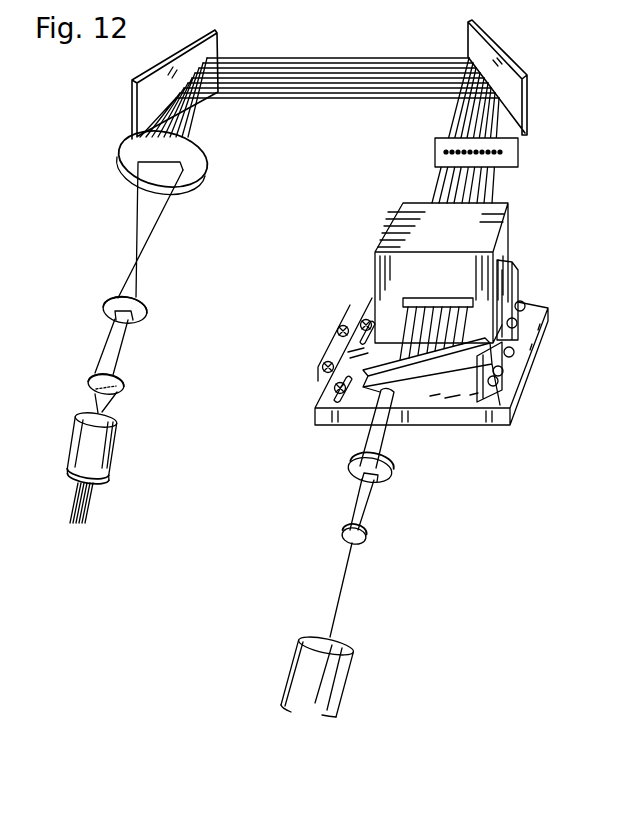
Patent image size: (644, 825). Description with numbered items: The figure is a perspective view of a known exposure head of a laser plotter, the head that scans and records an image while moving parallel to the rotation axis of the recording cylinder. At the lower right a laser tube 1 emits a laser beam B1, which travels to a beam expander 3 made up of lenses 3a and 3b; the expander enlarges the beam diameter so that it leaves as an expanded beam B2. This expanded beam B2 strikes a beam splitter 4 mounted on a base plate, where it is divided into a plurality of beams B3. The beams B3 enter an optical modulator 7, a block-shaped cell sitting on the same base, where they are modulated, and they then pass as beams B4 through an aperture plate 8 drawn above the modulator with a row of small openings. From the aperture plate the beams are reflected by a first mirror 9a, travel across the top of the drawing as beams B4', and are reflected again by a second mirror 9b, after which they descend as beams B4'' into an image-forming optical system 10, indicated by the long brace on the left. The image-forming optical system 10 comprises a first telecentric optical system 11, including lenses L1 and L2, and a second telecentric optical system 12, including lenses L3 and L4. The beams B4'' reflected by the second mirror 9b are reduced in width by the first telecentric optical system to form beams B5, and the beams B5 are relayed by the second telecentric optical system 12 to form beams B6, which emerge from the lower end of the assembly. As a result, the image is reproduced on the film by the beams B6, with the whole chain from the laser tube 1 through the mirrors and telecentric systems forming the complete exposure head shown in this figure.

The laser tube 1 is at (352, 676).
The beam expander 3 is at (410, 499).
The lens 3a is at (368, 537).
The lens 3b is at (377, 484).
The beam splitter 4 is at (453, 377).
The optical modulator 7 is at (505, 258).
The aperture plate 8 is at (520, 153).
The first mirror 9a is at (494, 47).
The second mirror 9b is at (183, 53).
The image-forming optical system 10 is at (143, 328).
The first telecentric optical system 11 is at (154, 224).
The second telecentric optical system 12 is at (105, 420).
The lens L1 is at (205, 168).
The lens L2 is at (148, 307).
The lens L3 is at (124, 375).
The lens L4 is at (112, 442).
The laser beam B1 is at (341, 591).
The expanded beam B2 is at (392, 458).
The beams B3 is at (407, 318).
The beams B4 is at (446, 130).
The beams B4' is at (337, 52).
The beams B4'' is at (197, 106).
The beams B5 is at (120, 343).
The beams B6 is at (104, 503).